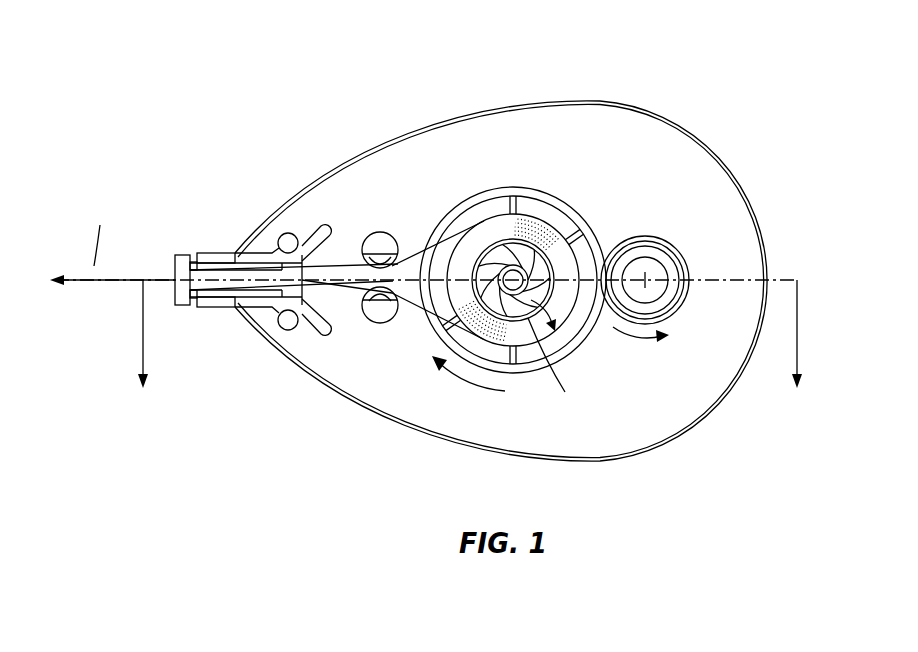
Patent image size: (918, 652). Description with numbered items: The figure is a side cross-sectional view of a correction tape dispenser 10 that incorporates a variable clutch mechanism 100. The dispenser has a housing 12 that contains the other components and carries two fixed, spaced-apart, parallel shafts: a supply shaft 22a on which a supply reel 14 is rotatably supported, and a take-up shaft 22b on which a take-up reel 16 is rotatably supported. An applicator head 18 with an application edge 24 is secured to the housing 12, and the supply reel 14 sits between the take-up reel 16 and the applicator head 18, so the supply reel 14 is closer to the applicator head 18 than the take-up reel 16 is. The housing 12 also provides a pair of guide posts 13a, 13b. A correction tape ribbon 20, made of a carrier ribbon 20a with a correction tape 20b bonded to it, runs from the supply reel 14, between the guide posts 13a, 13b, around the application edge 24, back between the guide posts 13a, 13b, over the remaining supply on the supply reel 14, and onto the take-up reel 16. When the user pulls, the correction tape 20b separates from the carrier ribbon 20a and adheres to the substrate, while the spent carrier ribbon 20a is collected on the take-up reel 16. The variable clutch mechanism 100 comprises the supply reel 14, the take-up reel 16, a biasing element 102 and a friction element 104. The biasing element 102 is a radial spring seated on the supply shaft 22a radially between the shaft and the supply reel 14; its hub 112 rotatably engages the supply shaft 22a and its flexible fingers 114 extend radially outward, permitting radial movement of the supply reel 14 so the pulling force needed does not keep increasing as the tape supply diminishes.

The correction tape dispenser 10 is at (699, 82).
The housing 12 is at (748, 186).
The supply reel 14 is at (597, 310).
The take-up reel 16 is at (697, 254).
The applicator head 18 is at (215, 316).
The application edge 24 is at (176, 262).
The guide post 13a is at (380, 324).
The guide post 13b is at (380, 235).
The correction tape ribbon 20 is at (421, 302).
The carrier ribbon 20a is at (343, 300).
The correction tape 20b is at (462, 298).
The supply shaft 22a is at (477, 252).
The take-up shaft 22b is at (641, 270).
The variable clutch mechanism 100 is at (508, 234).
The biasing element 102 is at (421, 244).
The friction element 104 is at (677, 303).
The hub 112 is at (543, 242).
The flexible fingers 114 is at (516, 290).